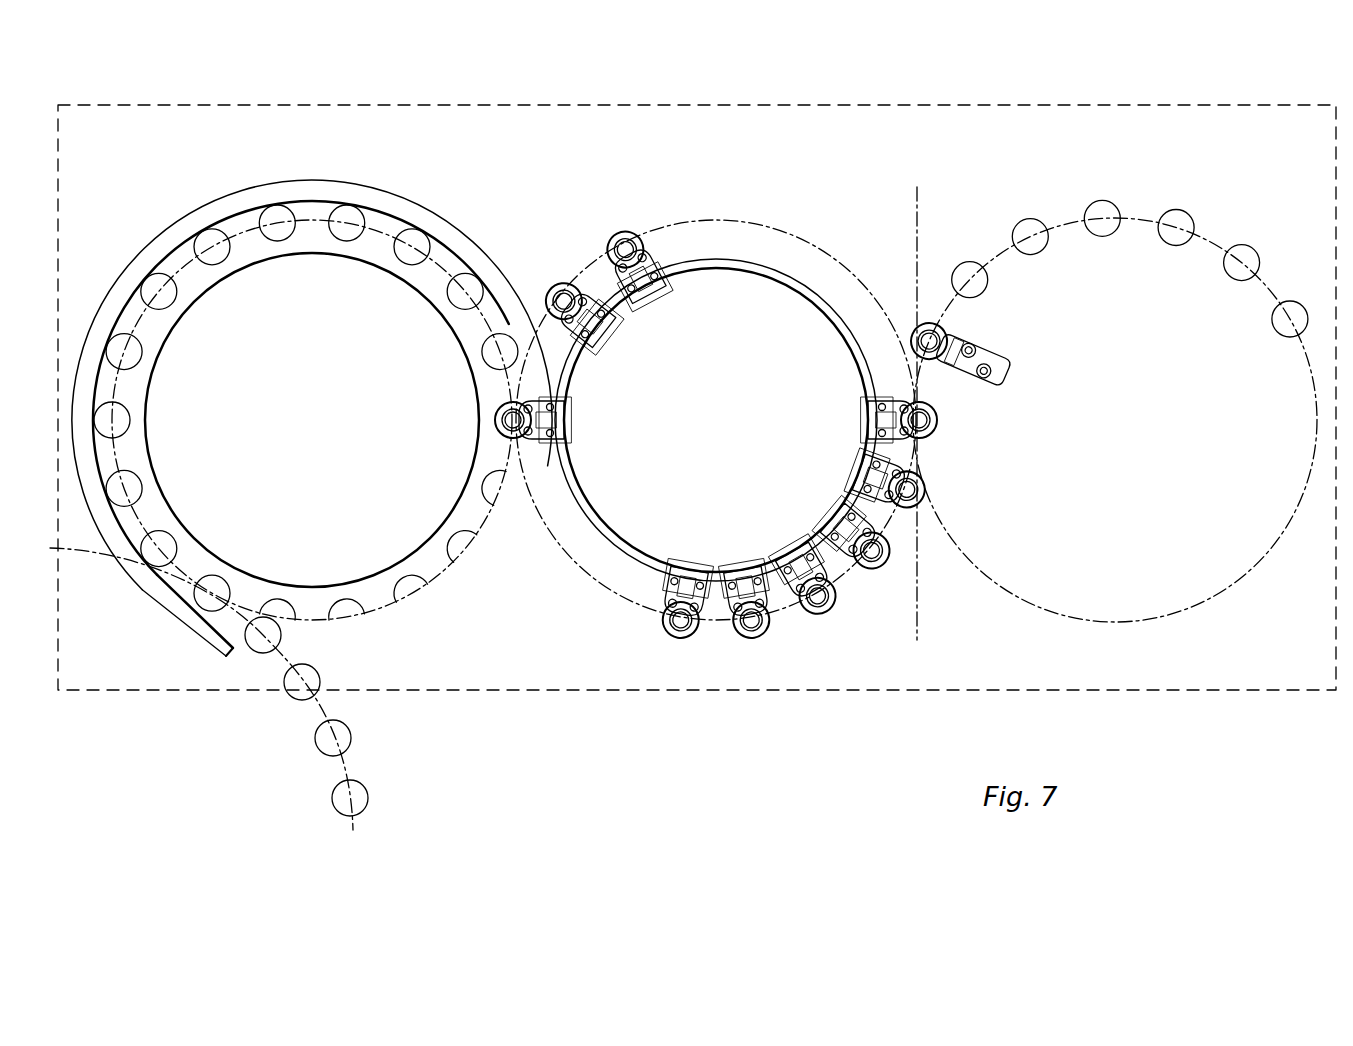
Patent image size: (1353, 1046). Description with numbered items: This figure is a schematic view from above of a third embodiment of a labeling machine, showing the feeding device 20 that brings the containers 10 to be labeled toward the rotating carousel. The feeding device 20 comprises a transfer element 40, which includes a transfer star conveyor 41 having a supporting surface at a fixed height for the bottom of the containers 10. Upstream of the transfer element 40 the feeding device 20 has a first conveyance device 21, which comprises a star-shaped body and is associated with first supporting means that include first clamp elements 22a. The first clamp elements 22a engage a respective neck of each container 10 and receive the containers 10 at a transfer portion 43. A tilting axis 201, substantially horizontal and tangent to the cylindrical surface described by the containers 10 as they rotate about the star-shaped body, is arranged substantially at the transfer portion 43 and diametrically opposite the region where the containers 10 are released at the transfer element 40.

The containers 10 is at (278, 212).
The feeding device 20 is at (924, 96).
The first conveyance device 21 is at (864, 720).
The first clamp elements 22a is at (630, 248).
The transfer element 40 is at (427, 609).
The transfer star conveyor 41 is at (247, 245).
The transfer portion 43 is at (949, 438).
The tilting axis 201 is at (913, 245).